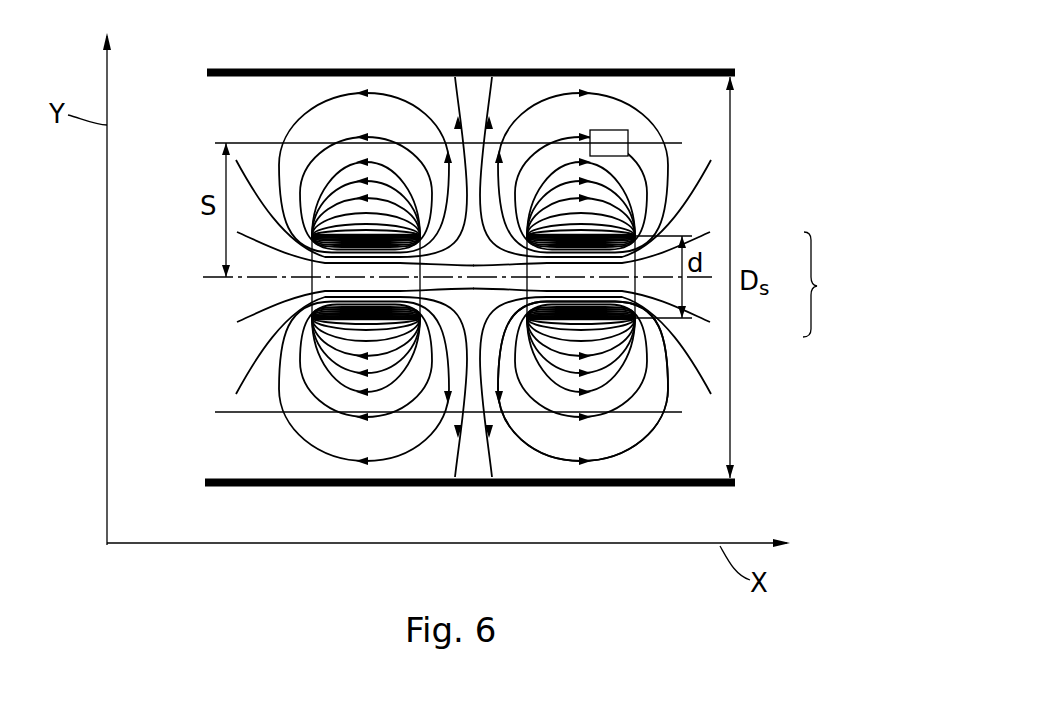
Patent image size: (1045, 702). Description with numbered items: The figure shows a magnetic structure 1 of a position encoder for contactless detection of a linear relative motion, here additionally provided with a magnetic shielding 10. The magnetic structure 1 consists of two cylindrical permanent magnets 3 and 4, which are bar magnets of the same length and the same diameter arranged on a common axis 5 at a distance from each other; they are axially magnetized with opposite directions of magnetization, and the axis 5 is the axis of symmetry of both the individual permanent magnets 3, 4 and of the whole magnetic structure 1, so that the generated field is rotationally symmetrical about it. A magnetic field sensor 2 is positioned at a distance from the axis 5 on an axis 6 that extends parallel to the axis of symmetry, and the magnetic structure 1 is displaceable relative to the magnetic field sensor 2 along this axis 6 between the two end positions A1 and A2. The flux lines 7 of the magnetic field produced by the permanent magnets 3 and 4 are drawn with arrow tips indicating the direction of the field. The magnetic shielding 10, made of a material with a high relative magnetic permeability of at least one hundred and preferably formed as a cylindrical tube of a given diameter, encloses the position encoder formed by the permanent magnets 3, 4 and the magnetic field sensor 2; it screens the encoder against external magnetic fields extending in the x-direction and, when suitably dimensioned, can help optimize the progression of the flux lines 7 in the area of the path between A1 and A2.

The magnetic structure 1 is at (821, 284).
The magnetic field sensor 2 is at (613, 130).
The permanent magnet 3 is at (340, 330).
The permanent magnet 4 is at (560, 326).
The axis 5 is at (268, 278).
The axis 6 is at (236, 143).
The flux lines 7 is at (672, 364).
The magnetic shielding 10 is at (301, 68).
The end position A1 is at (268, 136).
The end position A2 is at (676, 136).